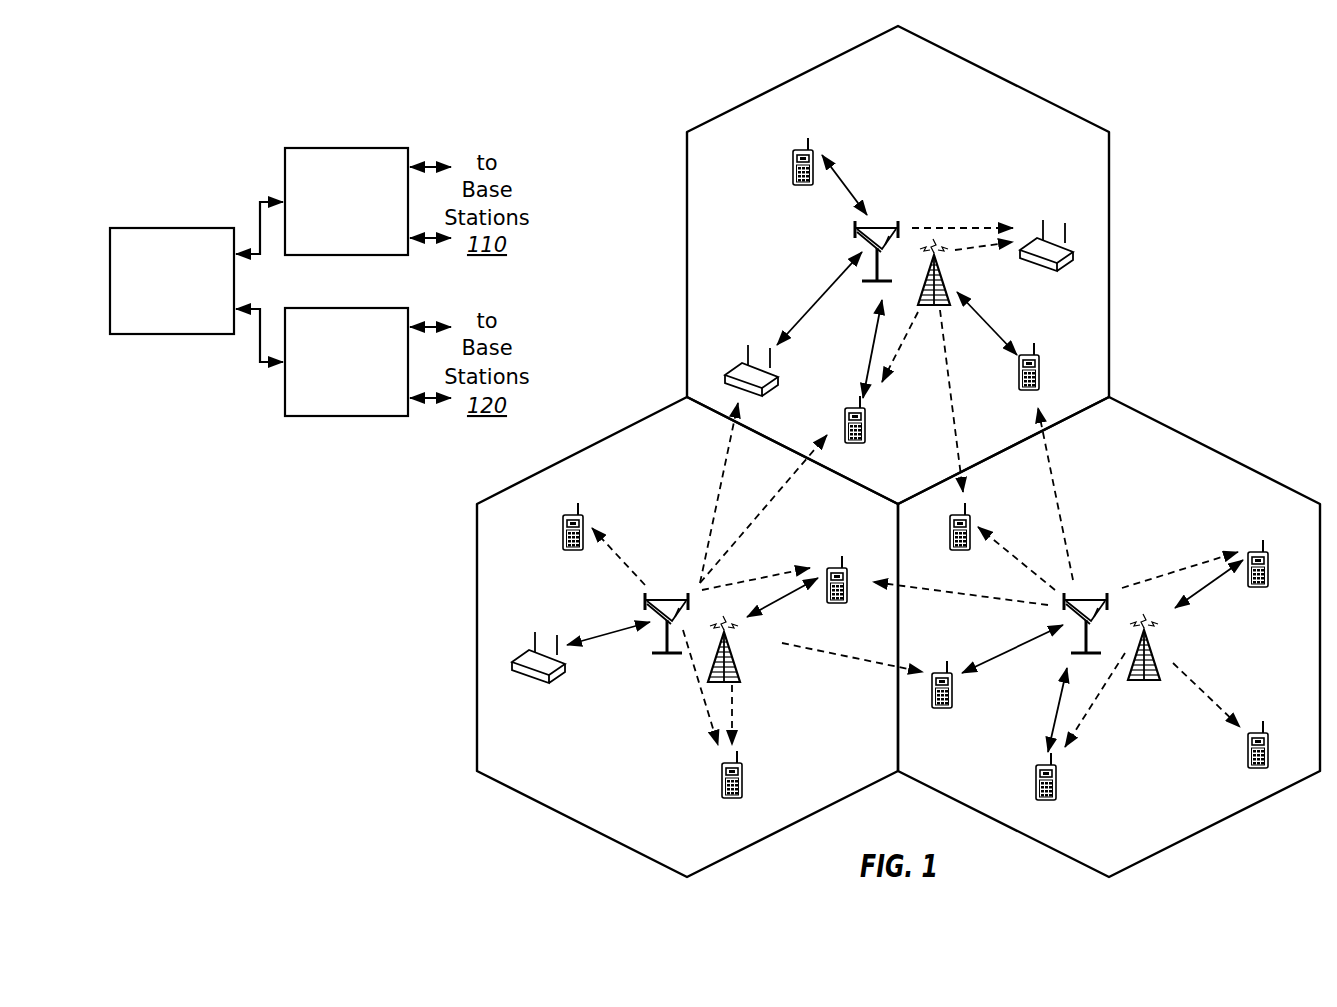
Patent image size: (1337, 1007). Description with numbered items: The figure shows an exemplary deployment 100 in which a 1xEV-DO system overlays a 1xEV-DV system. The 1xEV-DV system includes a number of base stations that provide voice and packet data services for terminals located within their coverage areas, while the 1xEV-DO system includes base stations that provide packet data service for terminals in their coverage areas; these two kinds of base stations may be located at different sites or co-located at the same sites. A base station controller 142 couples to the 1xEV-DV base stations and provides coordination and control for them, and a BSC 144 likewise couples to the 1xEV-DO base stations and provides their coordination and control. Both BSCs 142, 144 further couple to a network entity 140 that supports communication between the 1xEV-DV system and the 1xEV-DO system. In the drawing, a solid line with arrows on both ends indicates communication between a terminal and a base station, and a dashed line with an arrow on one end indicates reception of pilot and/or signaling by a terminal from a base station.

The deployment 100 is at (1262, 87).
The network entity 140 is at (165, 228).
The base station controller 142 is at (343, 148).
The BSC 144 is at (343, 308).